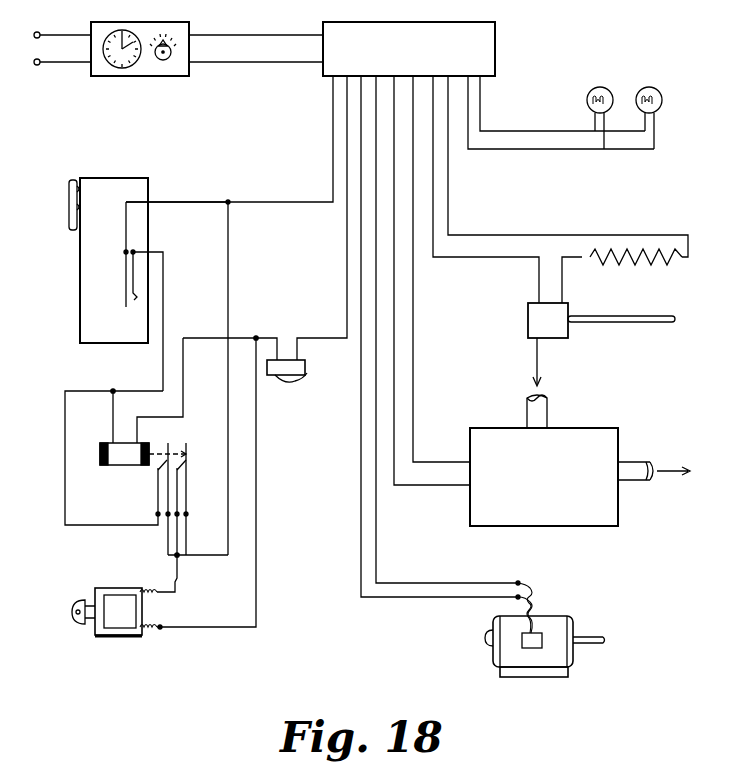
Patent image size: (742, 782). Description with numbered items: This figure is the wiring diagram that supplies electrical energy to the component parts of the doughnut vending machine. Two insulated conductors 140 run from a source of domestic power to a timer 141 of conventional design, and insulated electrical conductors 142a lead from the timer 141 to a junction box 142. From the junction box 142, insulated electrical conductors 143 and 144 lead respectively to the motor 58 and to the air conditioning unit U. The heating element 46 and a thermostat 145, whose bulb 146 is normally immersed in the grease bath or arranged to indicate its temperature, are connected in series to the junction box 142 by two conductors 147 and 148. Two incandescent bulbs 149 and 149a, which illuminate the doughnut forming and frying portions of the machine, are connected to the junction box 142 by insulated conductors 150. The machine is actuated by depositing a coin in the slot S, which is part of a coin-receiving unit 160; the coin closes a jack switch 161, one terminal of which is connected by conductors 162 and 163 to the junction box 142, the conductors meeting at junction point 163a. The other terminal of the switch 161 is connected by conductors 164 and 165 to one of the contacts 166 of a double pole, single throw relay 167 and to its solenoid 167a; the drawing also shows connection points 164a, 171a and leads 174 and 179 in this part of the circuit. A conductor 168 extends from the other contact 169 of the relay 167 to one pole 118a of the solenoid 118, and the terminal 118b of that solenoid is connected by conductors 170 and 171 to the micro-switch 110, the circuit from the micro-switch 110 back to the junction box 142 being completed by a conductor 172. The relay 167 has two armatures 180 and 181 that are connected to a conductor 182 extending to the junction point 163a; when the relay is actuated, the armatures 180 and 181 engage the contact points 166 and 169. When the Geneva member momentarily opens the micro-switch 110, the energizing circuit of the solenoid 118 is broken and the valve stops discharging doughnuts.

The insulated conductors 140 is at (50, 38).
The timer 141 is at (107, 78).
The junction box 142 is at (422, 59).
The insulated electrical conductors 142a is at (235, 38).
The incandescent bulb 149 is at (587, 101).
The incandescent bulb 149a is at (664, 101).
The insulated conductors 150 is at (505, 136).
The slot S is at (68, 184).
The coin-receiving unit 160 is at (116, 228).
The jack switch 161 is at (122, 269).
The conductor 162 is at (153, 206).
The conductor 163 is at (298, 205).
The junction point 163a is at (228, 200).
The conductor 164 is at (168, 288).
The junction 164a is at (113, 389).
The conductor 172 is at (346, 278).
The conductor 171 is at (262, 336).
The wire 171a is at (228, 336).
The micro-switch 110 is at (300, 360).
The insulated electrical conductor 144 is at (402, 283).
The conductor 147 is at (500, 234).
The conductor 148 is at (462, 256).
The heating element 46 is at (630, 262).
The thermostat 145 is at (548, 331).
The bulb 146 is at (612, 314).
The air conditioning unit U is at (544, 482).
The insulated electrical conductor 143 is at (362, 521).
The motor 58 is at (575, 658).
The conductor 170 is at (256, 562).
The wire 174 is at (183, 402).
The wire 179 is at (114, 401).
The conductor 165 is at (65, 446).
The solenoid 167a is at (138, 463).
The relay 167 is at (100, 458).
The contact 166 is at (157, 468).
The contact 169 is at (184, 467).
The armature 180 is at (166, 492).
The armature 181 is at (187, 494).
The conductor 182 is at (198, 560).
The conductor 168 is at (177, 583).
The solenoid 118 is at (110, 644).
The pole 118a is at (144, 587).
The terminal 118b is at (147, 632).